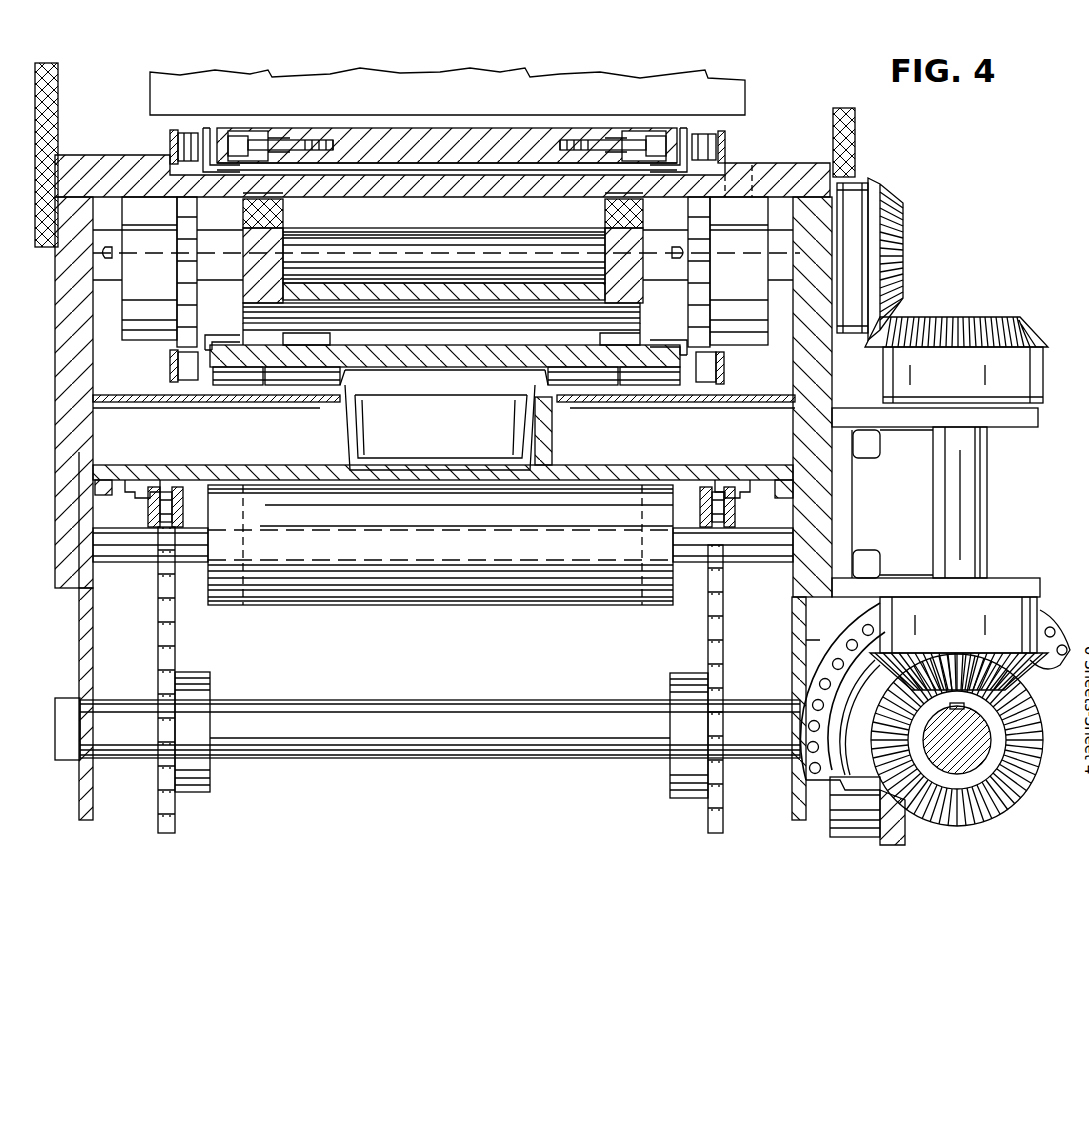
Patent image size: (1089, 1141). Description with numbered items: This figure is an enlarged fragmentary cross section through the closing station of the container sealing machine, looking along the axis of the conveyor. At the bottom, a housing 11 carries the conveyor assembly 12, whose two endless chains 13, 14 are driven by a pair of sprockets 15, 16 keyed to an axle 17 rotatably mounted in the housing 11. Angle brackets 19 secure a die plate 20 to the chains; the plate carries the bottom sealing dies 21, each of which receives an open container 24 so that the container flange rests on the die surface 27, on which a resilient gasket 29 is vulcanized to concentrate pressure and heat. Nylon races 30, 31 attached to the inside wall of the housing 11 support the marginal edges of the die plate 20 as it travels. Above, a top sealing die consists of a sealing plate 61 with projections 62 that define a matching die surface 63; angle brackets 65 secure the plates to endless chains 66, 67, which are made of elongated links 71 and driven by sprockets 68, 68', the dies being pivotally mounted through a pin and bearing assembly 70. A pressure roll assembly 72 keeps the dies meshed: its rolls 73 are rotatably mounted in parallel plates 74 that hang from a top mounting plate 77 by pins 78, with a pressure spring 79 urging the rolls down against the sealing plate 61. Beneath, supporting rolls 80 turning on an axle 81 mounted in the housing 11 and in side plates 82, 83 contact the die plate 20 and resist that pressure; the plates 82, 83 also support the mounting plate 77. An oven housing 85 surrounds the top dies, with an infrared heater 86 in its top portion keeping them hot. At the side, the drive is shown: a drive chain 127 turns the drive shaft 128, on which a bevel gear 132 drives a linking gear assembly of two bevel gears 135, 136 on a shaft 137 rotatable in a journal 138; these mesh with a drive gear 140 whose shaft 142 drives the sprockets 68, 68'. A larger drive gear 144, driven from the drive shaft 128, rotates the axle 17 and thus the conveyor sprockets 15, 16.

The housing 11 is at (85, 648).
The conveyor assembly 12 is at (153, 641).
The endless chain 13 is at (175, 512).
The endless chain 14 is at (705, 516).
The sprocket 15 is at (166, 650).
The sprocket 16 is at (708, 656).
The axle 17 is at (440, 758).
The angle bracket 19 is at (140, 480).
The die plate 20 is at (640, 466).
The bottom sealing die 21 is at (545, 456).
The container 24 is at (449, 427).
The die surface 27 is at (360, 398).
The resilient gasket 29 is at (546, 410).
The nylon race 30 is at (100, 495).
The nylon race 31 is at (775, 496).
The sealing plate 61 is at (446, 370).
The top die projection 62 is at (352, 381).
The die surface 63 is at (530, 128).
The angle bracket 65 is at (213, 130).
The endless chain 66 is at (170, 133).
The endless chain 67 is at (726, 140).
The sprocket 68 is at (168, 272).
The sprocket 68' is at (718, 272).
The pin and bearing assembly 70 is at (240, 140).
The elongated link 71 is at (178, 140).
The pressure roll assembly 72 is at (470, 285).
The roll 73 is at (355, 290).
The parallel plate 74 is at (283, 252).
The top mounting plate 77 is at (752, 172).
The pin 78 is at (243, 228).
The pressure spring 79 is at (243, 208).
The supporting roll 80 is at (445, 605).
The axle 81 is at (110, 550).
The plate 82 is at (58, 386).
The plate 83 is at (820, 390).
The oven housing 85 is at (58, 82).
The infrared heater 86 is at (300, 82).
The drive chain 127 is at (1046, 640).
The drive shaft 128 is at (970, 762).
The bevel gear 132 is at (1030, 770).
The bevel gear 135 is at (1022, 606).
The bevel gear 136 is at (938, 318).
The shaft 137 is at (987, 490).
The journal 138 is at (1028, 420).
The drive gear 140 is at (895, 270).
The shaft 142 is at (545, 245).
The drive gear 144 is at (896, 840).